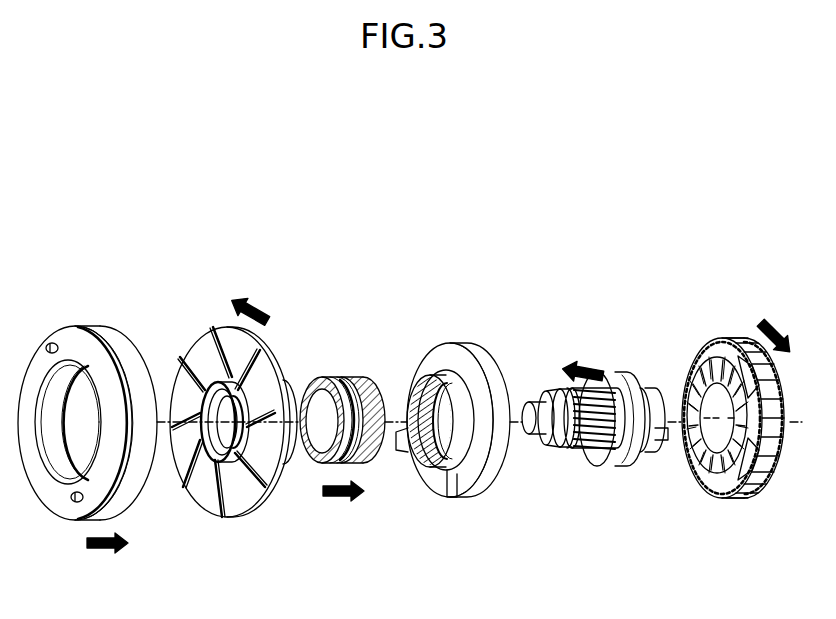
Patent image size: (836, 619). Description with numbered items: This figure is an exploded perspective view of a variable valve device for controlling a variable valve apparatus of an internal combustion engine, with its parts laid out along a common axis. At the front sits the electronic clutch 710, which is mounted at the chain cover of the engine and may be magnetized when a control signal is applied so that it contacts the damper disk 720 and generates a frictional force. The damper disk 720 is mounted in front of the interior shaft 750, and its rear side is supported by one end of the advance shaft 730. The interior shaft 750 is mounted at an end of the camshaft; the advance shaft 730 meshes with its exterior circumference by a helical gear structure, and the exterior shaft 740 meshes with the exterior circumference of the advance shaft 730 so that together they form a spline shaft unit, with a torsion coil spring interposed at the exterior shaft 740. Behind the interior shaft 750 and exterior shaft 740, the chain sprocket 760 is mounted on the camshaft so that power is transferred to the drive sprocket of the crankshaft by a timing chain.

The electronic clutch 710 is at (99, 326).
The damper disk 720 is at (222, 327).
The advance shaft 730 is at (352, 377).
The exterior shaft 740 is at (458, 343).
The interior shaft 750 is at (597, 375).
The chain sprocket 760 is at (735, 335).